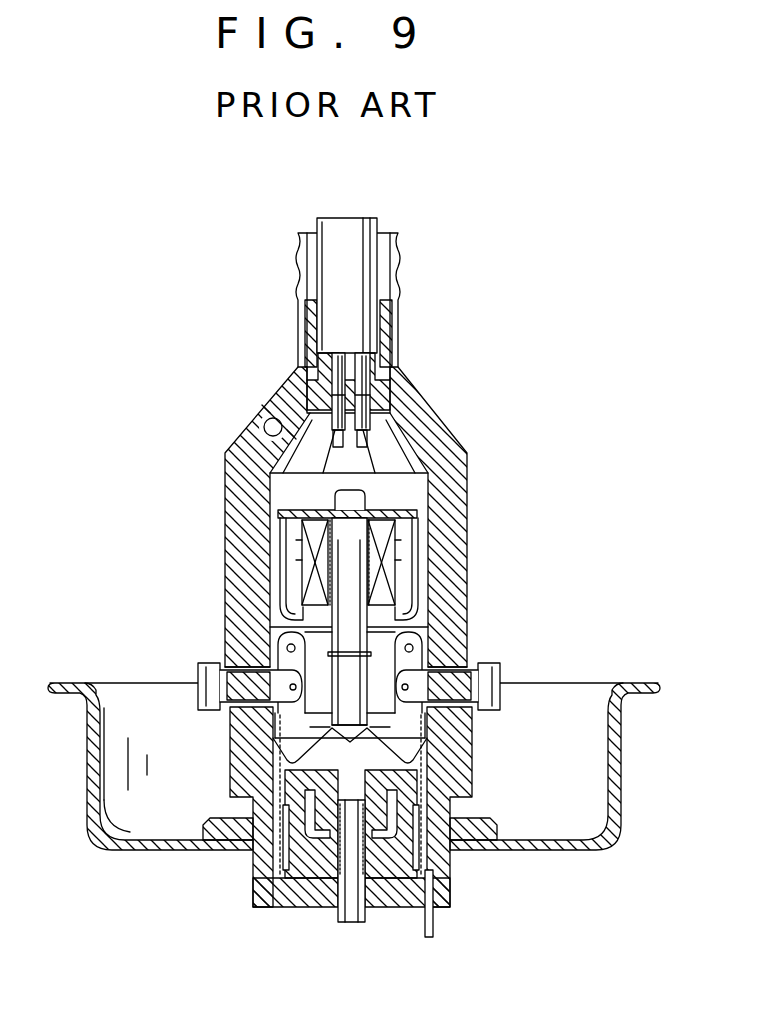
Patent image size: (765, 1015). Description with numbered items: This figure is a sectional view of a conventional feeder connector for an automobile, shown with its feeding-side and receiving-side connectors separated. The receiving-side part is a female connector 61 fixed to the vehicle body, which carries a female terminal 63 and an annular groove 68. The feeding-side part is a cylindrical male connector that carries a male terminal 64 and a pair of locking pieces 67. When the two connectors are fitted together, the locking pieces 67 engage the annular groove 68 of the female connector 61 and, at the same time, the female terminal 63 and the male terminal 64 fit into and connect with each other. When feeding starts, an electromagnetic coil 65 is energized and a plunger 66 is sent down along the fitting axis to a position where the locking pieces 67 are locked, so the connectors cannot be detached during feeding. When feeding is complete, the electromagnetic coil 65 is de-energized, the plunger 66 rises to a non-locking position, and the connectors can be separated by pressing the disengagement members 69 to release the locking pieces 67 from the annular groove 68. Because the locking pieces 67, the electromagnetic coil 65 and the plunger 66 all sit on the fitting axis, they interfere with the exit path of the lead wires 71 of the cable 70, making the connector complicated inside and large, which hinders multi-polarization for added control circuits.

The female connector 61 is at (433, 795).
The female terminal 63 is at (330, 853).
The male terminal 64 is at (353, 923).
The electromagnetic coil 65 is at (390, 555).
The plunger 66 is at (390, 667).
The locking pieces 67 is at (350, 748).
The annular groove 68 is at (427, 757).
The disengagement members 69 is at (467, 683).
The cable 70 is at (378, 222).
The lead wires 71 is at (370, 440).